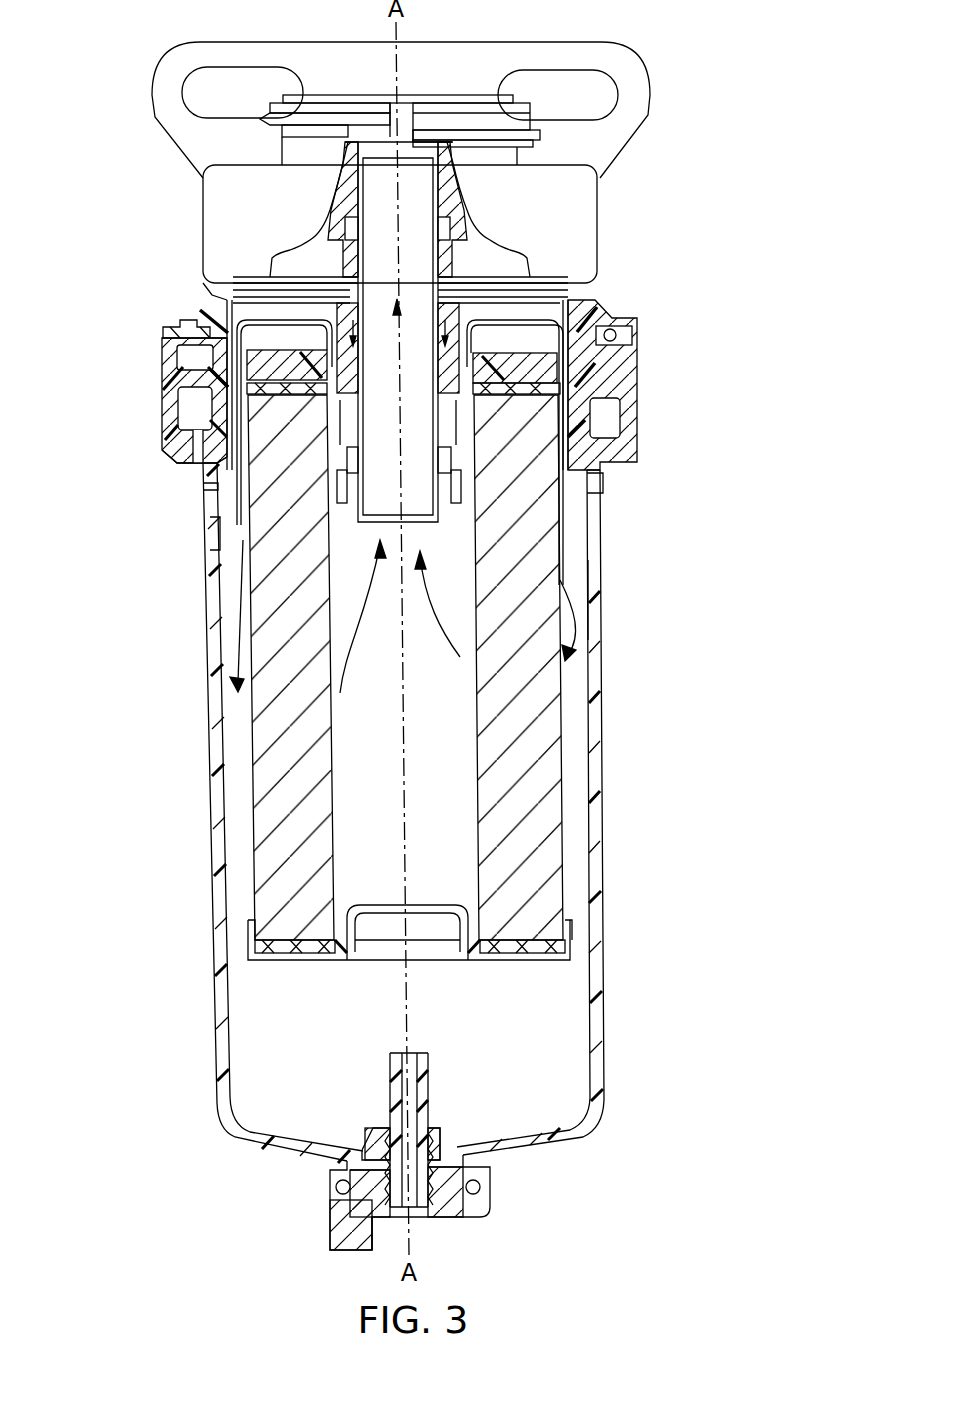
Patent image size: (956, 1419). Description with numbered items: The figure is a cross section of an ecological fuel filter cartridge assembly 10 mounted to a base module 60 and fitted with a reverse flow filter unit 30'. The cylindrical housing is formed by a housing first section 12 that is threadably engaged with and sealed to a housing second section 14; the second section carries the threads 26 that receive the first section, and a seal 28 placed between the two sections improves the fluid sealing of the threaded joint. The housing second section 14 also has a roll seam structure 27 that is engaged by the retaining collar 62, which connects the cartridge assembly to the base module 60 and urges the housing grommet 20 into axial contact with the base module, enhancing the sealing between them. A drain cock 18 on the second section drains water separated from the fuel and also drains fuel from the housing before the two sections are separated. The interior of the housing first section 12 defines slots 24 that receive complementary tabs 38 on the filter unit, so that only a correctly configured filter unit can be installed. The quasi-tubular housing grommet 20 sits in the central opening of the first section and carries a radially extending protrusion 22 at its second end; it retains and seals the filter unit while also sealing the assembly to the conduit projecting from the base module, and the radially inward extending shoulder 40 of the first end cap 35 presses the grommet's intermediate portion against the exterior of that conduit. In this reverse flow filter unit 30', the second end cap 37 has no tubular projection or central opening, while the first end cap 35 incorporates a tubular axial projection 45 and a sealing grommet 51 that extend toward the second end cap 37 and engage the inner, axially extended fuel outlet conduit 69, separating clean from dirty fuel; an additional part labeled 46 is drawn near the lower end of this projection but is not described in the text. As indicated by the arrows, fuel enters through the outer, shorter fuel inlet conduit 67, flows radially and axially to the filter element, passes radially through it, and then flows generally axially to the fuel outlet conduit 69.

The fuel filter cartridge assembly 10 is at (200, 813).
The housing first section 12 is at (563, 313).
The housing second section 14 is at (604, 855).
The drain cock 18 is at (490, 1190).
The housing grommet 20 is at (203, 283).
The radially extending protrusion 22 is at (250, 368).
The slots 24 is at (604, 592).
The threads 26 is at (598, 523).
The roll seam structure 27 is at (200, 458).
The seal 28 is at (200, 487).
The reverse flow filter unit 30' is at (478, 667).
The first end cap 35 is at (540, 366).
The second end cap 37 is at (548, 962).
The tabs 38 is at (618, 335).
The radially inward extending shoulder 40 is at (168, 337).
The tubular axial projection 45 is at (473, 403).
The standpipe flange 46 is at (347, 480).
The sealing grommet 51 is at (362, 521).
The base module 60 is at (186, 191).
The retaining collar 62 is at (161, 412).
The fuel inlet conduit 67 is at (446, 402).
The fuel outlet conduit 69 is at (370, 527).